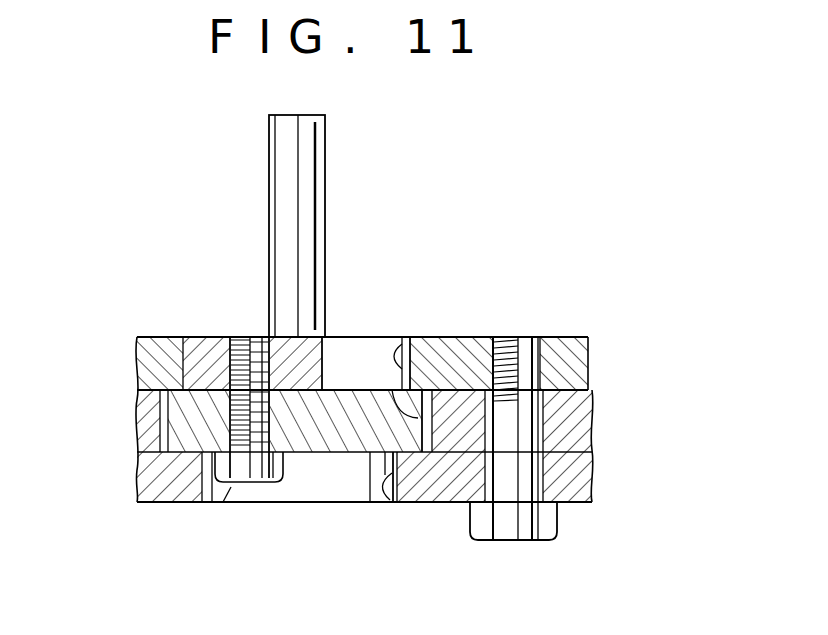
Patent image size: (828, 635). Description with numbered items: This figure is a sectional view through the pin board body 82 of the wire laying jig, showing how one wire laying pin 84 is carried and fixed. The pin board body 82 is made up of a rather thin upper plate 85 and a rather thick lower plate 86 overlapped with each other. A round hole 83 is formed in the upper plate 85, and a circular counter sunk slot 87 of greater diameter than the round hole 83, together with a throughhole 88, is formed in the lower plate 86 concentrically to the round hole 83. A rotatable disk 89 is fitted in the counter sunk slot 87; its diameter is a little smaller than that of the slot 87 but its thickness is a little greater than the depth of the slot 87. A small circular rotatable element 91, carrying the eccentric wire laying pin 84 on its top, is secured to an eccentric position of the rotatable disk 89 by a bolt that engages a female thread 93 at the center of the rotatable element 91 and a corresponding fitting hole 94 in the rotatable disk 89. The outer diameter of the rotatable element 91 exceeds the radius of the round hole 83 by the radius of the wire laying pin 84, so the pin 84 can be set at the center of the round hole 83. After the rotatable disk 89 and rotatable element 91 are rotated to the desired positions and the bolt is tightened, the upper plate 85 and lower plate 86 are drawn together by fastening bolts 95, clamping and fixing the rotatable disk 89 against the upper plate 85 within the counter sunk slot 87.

The pin board body 82 is at (468, 337).
The round hole 83 is at (400, 345).
The wire laying pin 84 is at (327, 175).
The upper plate 85 is at (566, 345).
The lower plate 86 is at (593, 430).
The counter sunk slot 87 is at (412, 432).
The throughhole 88 is at (386, 500).
The rotatable disk 89 is at (342, 443).
The rotatable element 91 is at (195, 338).
The female thread 93 is at (245, 337).
The fitting hole 94 is at (281, 478).
The fastening bolt 95 is at (557, 513).